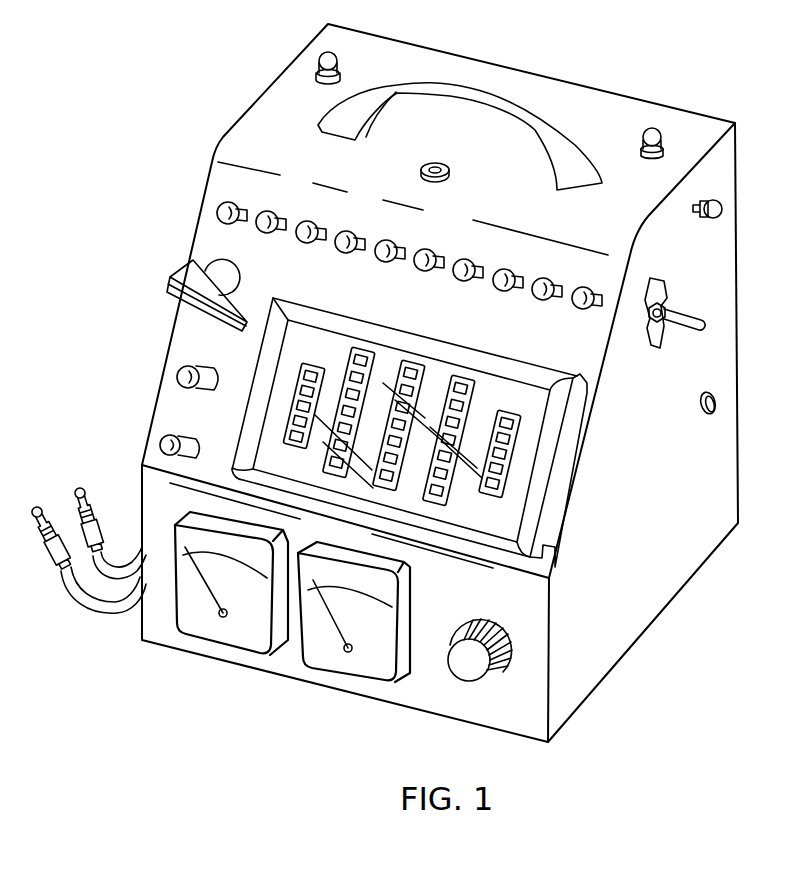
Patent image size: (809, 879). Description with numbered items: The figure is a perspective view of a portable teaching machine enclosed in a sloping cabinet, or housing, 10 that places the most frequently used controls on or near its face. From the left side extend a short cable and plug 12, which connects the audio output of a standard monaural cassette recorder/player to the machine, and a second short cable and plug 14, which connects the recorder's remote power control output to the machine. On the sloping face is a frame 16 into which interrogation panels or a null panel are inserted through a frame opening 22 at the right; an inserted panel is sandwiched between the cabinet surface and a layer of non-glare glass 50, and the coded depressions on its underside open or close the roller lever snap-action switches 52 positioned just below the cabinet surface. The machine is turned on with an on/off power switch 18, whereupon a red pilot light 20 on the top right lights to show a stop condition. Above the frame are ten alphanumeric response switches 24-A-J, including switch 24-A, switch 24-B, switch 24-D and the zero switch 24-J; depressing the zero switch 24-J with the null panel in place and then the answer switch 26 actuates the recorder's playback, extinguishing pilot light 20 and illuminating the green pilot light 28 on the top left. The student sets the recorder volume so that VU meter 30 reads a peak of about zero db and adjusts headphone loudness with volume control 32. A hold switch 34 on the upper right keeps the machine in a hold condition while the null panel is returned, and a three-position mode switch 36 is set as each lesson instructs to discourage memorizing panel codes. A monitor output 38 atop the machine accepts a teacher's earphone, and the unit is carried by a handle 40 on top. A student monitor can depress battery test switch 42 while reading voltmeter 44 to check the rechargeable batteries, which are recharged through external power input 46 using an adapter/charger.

The sloping cabinet 10 is at (278, 117).
The short cable and plug 12 is at (73, 510).
The short cable and plug 14 is at (70, 595).
The frame 16 is at (445, 352).
The on/off power switch 18 is at (148, 443).
The pilot light 20 is at (661, 144).
The frame opening 22 is at (563, 470).
The alphanumeric response switch 24-A is at (180, 216).
The alphanumeric response switch 24-B is at (279, 205).
The alphanumeric response switch 24-D is at (354, 226).
The zero alphanumeric switch 24-J is at (557, 315).
The alphanumeric response switches 24-A-J is at (357, 260).
The answer switch 26 is at (176, 375).
The pilot light 28 is at (344, 61).
The VU meter 30 is at (378, 668).
The volume control 32 is at (510, 664).
The hold switch 34 is at (713, 291).
The mode switch 36 is at (190, 318).
The monitor output 38 is at (432, 164).
The handle 40 is at (577, 167).
The battery test switch 42 is at (719, 202).
The voltmeter 44 is at (253, 637).
The external power input 46 is at (702, 408).
The layer of non-glare glass 50 is at (492, 513).
The roller lever snap-action switches 52 is at (339, 356).